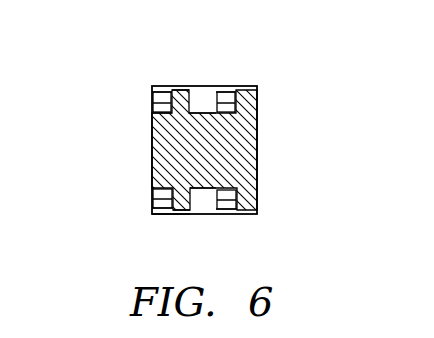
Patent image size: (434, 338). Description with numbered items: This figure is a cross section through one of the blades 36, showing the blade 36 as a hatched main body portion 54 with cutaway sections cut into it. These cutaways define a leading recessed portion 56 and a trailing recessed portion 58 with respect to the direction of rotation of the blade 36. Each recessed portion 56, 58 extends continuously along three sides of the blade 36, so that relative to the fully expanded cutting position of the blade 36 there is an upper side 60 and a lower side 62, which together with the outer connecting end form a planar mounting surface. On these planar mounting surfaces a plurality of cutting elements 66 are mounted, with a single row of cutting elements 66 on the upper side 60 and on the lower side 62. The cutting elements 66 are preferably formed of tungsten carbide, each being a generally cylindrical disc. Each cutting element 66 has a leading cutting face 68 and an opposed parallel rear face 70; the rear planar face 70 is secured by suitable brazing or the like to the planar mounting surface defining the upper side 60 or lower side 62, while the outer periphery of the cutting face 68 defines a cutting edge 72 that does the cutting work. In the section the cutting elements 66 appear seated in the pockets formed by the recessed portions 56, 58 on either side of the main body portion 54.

The blade 36 is at (194, 83).
The main body portion 54 is at (257, 165).
The leading recessed portion 56 is at (161, 214).
The trailing recessed portion 58 is at (207, 190).
The upper side 60 is at (160, 94).
The lower side 62 is at (160, 202).
The cutting element 66 is at (158, 90).
The leading cutting face 68 is at (165, 104).
The rear face 70 is at (182, 85).
The cutting edge 72 is at (168, 116).